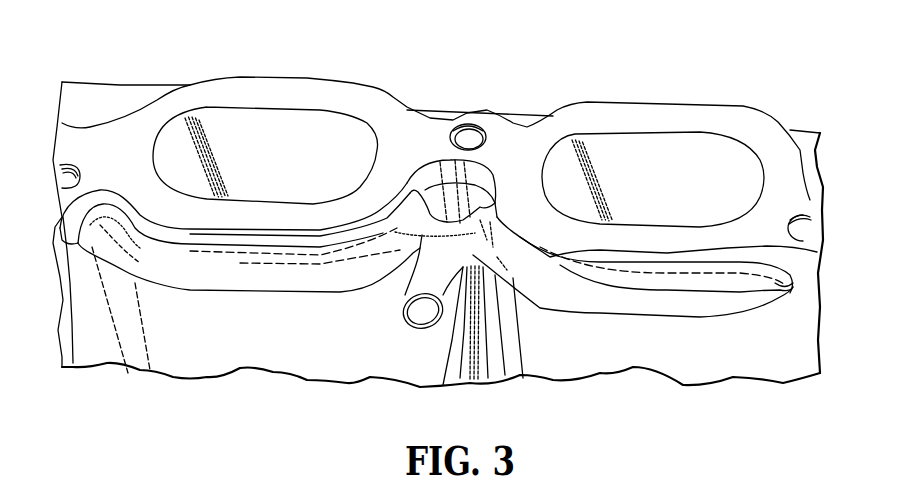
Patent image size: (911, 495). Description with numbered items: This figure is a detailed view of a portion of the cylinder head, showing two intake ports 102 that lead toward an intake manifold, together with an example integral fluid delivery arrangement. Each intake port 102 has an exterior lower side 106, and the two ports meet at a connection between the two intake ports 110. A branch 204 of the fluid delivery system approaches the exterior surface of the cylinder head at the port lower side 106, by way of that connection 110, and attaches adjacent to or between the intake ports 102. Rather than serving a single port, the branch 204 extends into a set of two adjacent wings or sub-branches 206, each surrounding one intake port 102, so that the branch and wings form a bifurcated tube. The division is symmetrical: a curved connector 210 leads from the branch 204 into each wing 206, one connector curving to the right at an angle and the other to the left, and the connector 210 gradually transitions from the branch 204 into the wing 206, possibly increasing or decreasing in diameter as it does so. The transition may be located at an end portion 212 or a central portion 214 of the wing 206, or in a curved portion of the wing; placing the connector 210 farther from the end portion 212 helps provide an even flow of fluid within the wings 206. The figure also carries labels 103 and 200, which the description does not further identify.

The intake port 102 is at (745, 105).
The intake opening 103 is at (235, 135).
The exterior lower side 106 is at (345, 233).
The connection between two intake ports 110 is at (483, 110).
The intake manifold 200 is at (400, 392).
The branch 204 is at (422, 313).
The wing 206 is at (812, 287).
The connector 210 is at (442, 160).
The end portion 212 is at (383, 243).
The central portion 214 is at (253, 255).